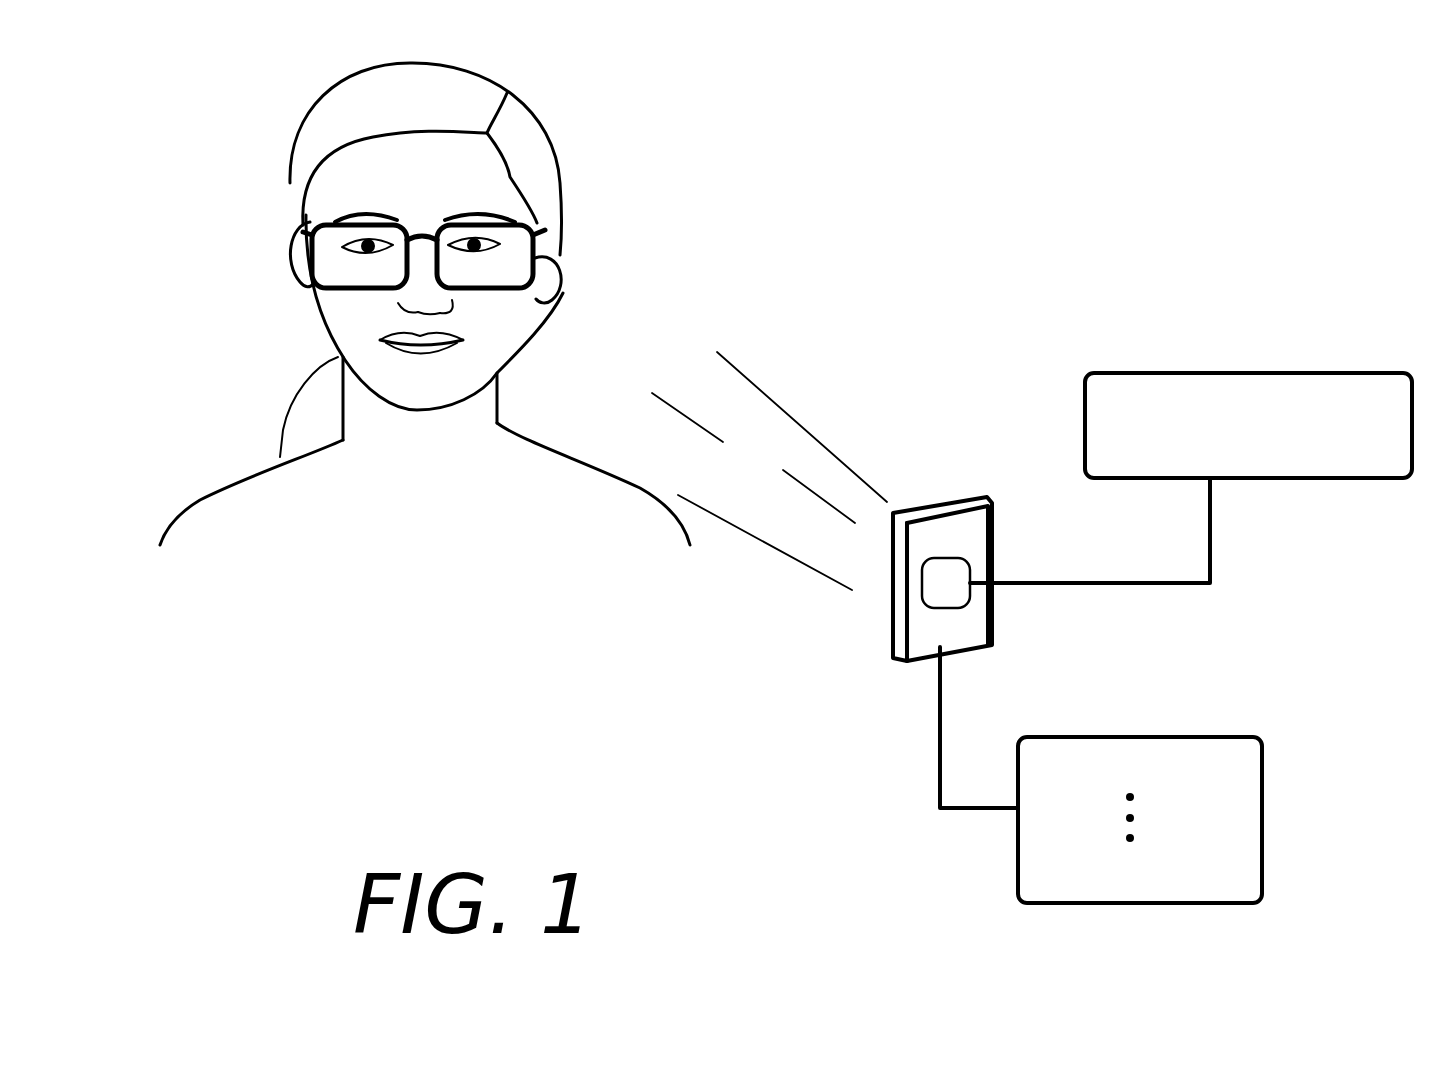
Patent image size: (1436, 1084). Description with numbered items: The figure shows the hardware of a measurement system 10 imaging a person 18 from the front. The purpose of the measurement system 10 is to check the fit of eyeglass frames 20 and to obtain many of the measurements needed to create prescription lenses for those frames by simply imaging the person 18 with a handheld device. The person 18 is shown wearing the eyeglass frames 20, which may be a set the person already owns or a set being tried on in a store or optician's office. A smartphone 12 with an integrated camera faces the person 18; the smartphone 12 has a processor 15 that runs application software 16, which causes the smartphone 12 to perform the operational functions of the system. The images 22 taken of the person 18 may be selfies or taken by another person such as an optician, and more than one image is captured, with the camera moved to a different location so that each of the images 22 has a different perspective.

The measurement system 10 is at (877, 245).
The smartphone 12 is at (945, 508).
The processor 15 is at (970, 597).
The application software 16 is at (1270, 478).
The person 18 is at (530, 152).
The eyeglass frames 20 is at (497, 287).
The images 22 is at (1263, 808).